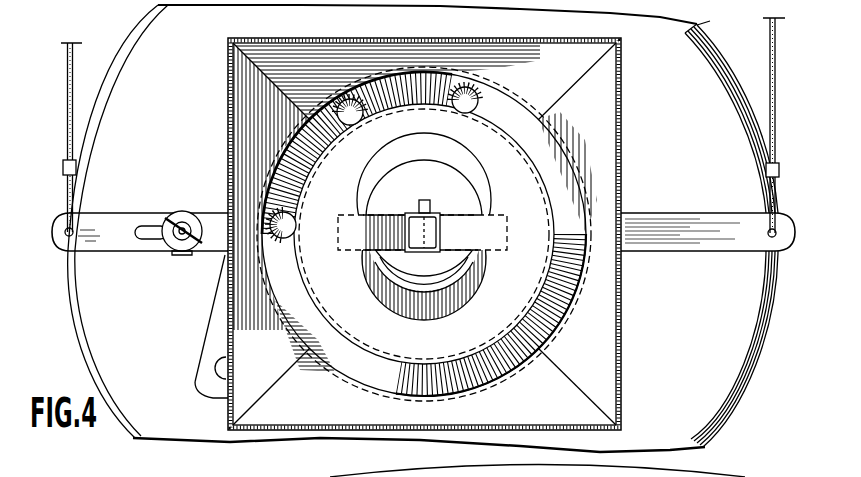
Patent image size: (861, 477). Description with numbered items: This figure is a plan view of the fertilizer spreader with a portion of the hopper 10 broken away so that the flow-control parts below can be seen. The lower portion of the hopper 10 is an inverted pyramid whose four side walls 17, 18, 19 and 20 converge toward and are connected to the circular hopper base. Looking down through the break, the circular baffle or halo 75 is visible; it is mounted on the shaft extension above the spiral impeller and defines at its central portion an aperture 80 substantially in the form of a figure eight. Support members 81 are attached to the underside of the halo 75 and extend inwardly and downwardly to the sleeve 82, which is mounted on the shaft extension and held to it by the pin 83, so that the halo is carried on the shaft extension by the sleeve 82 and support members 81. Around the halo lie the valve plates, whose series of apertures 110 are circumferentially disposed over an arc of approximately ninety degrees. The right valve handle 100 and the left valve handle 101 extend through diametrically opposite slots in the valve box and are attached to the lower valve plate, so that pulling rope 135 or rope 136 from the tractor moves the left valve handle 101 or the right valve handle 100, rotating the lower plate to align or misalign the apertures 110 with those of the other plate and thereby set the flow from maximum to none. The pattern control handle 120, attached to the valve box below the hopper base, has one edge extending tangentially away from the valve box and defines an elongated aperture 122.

The hopper 10 is at (543, 34).
The side wall 17 is at (424, 81).
The side wall 18 is at (608, 138).
The side wall 19 is at (508, 413).
The side wall 20 is at (258, 385).
The circular baffle or halo 75 is at (528, 210).
The aperture 80 is at (480, 152).
The support member 81 is at (470, 241).
The sleeve 82 is at (408, 253).
The pin 83 is at (430, 253).
The right valve handle 100 is at (744, 226).
The left valve handle 101 is at (110, 226).
The apertures 110 is at (473, 101).
The pattern control handle 120 is at (213, 348).
The elongated aperture 122 is at (196, 378).
The rope 135 is at (67, 80).
The rope 136 is at (776, 43).